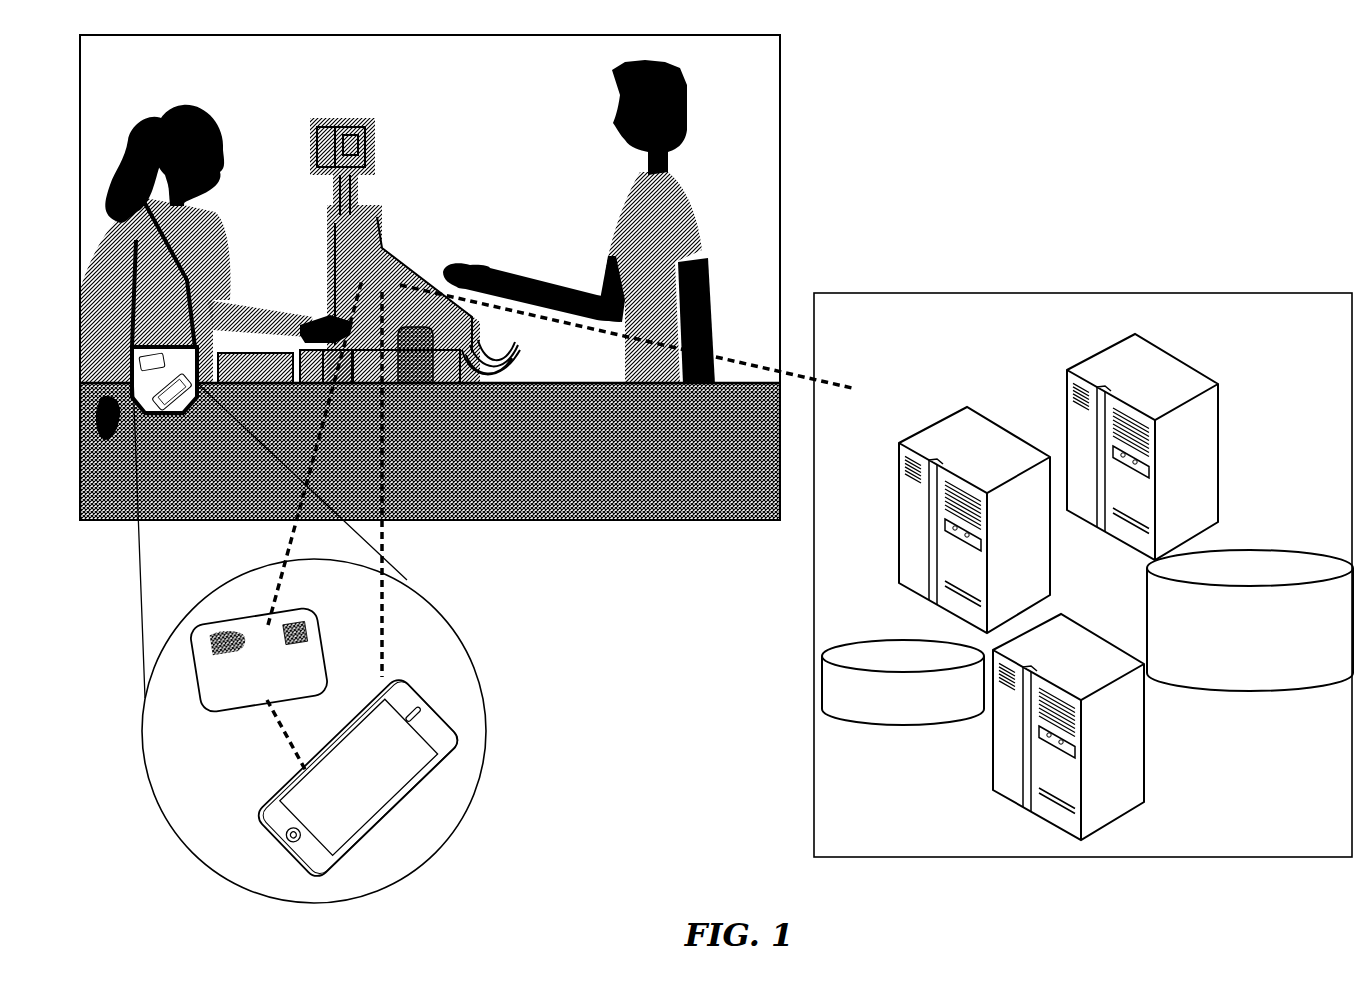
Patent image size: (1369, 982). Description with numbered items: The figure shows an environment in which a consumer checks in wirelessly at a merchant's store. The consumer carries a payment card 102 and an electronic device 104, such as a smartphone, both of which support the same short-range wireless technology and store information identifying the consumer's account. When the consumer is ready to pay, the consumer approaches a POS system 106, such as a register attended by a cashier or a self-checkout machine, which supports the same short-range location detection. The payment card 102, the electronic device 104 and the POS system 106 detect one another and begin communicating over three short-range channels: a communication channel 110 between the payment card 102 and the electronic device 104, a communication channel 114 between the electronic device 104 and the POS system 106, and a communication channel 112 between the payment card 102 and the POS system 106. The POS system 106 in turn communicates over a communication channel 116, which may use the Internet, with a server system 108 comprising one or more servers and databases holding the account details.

The payment card 102 is at (222, 716).
The electronic device 104 is at (442, 702).
The POS system 106 is at (382, 225).
The server system 108 is at (1268, 293).
The communication channel 110 is at (283, 720).
The communication channel 112 is at (288, 545).
The communication channel 114 is at (383, 543).
The communication channel 116 is at (812, 320).